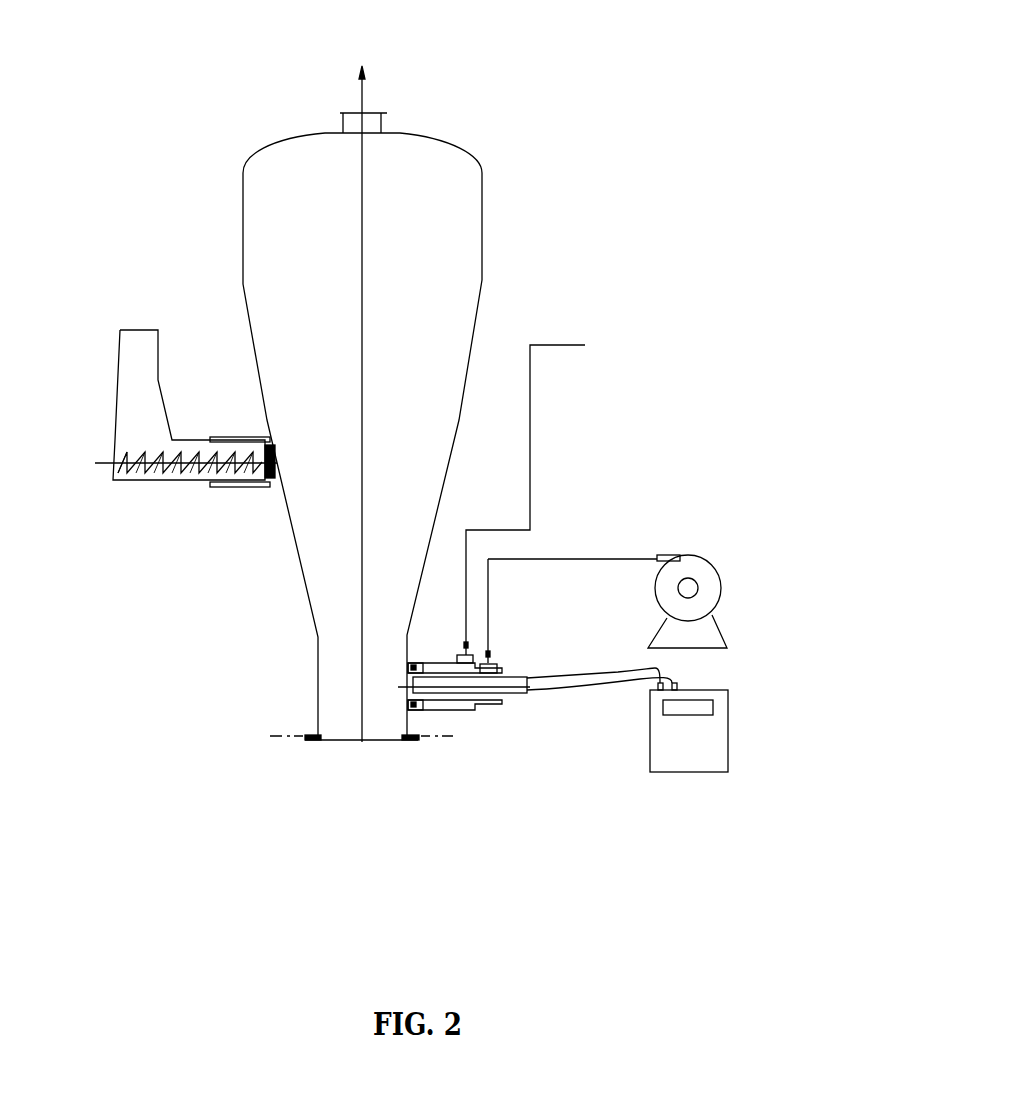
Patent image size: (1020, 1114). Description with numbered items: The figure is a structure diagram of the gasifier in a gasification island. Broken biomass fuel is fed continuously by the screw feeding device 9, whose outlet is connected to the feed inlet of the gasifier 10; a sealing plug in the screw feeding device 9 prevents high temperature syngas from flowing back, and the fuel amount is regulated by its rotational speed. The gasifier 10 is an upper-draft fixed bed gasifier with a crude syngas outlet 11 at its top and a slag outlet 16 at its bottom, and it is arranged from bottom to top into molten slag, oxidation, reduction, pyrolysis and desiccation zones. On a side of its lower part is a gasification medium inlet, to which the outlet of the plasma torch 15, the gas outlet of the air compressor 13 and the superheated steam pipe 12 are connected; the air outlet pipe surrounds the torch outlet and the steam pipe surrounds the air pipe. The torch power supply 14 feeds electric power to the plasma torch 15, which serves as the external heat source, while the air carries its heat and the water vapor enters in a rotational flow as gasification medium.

The screw feeding device 9 is at (130, 373).
The gasifier 10 is at (262, 245).
The crude syngas outlet 11 is at (353, 112).
The superheated steam pipe 12 is at (545, 345).
The air compressor 13 is at (708, 587).
The torch power supply 14 is at (720, 725).
The plasma torch 15 is at (505, 688).
The slag outlet 16 is at (308, 742).